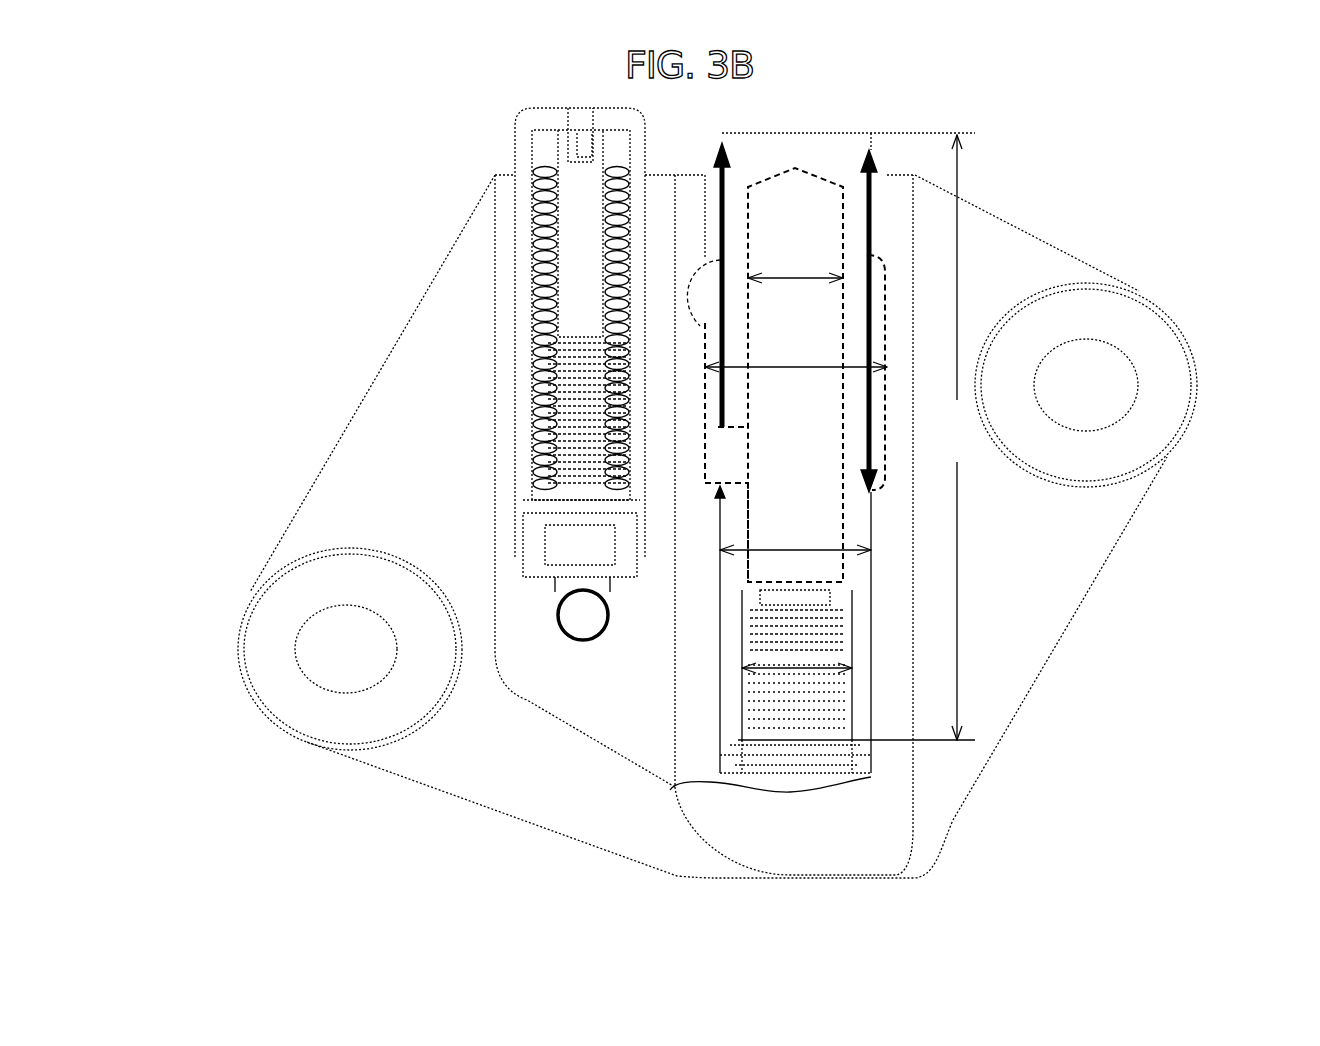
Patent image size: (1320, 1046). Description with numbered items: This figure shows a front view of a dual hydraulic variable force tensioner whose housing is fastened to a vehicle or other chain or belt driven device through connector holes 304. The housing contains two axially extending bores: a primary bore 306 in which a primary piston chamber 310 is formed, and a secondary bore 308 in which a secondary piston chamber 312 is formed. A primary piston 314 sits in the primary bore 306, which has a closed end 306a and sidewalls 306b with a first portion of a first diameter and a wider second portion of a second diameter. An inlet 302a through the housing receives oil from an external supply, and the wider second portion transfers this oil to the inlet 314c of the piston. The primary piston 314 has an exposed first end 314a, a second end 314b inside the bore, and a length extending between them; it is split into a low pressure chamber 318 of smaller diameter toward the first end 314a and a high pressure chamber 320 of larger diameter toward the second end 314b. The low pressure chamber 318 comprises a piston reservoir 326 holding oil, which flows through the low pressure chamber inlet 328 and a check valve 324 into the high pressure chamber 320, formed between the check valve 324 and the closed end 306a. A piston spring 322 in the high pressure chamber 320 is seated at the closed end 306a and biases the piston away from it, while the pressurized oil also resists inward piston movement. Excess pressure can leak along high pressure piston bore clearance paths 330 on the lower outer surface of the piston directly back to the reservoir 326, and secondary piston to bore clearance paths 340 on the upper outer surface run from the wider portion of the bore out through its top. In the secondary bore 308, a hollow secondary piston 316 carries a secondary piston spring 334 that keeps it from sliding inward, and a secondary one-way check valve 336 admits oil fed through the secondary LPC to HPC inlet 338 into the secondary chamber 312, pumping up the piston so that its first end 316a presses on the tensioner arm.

The inlet 302a is at (709, 294).
The connector holes 304 is at (333, 660).
The primary bore 306 is at (727, 186).
The closed end 306a is at (670, 790).
The sidewalls 306b is at (877, 203).
The secondary bore 308 is at (643, 346).
The primary piston chamber 310 is at (860, 517).
The secondary piston chamber 312 is at (540, 296).
The primary piston 314 is at (813, 207).
The first end 314a is at (760, 160).
The second end 314b is at (805, 744).
The inlet 314c is at (749, 448).
The secondary piston 316 is at (515, 232).
The first end 316a is at (535, 118).
The low pressure chamber 318 is at (872, 180).
The high pressure chamber 320 is at (833, 698).
The piston spring 322 is at (848, 680).
The check valve 324 is at (842, 617).
The piston reservoir 326 is at (750, 500).
The low pressure chamber inlet 328 is at (822, 590).
The high pressure piston bore clearance paths 330 is at (720, 698).
The secondary piston spring 334 is at (550, 435).
The secondary one-way check valve 336 is at (557, 525).
The secondary LPC to HPC inlet 338 is at (553, 626).
The secondary piston to bore clearance paths 340 is at (724, 222).